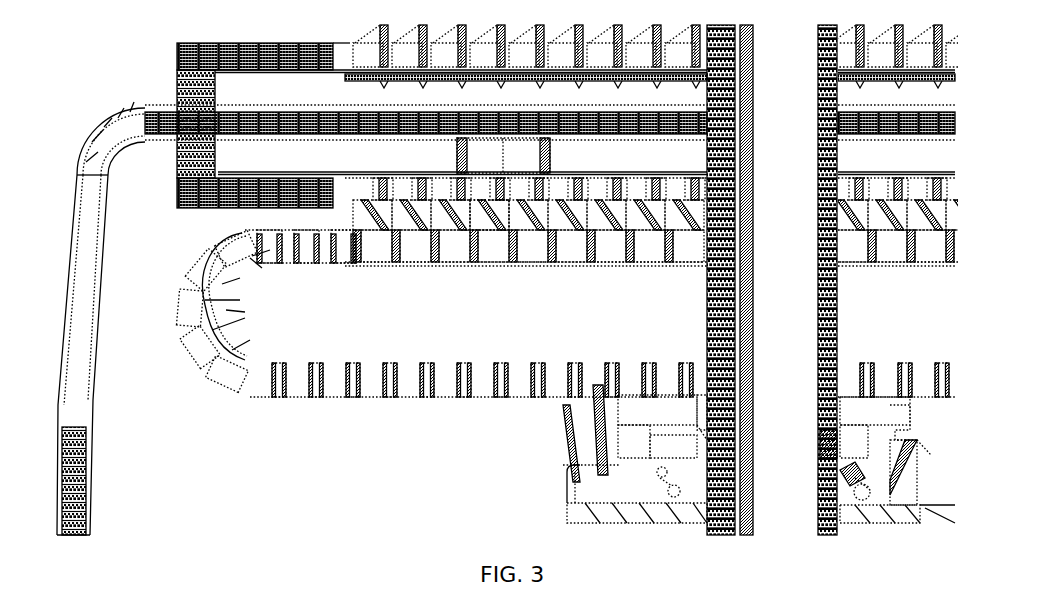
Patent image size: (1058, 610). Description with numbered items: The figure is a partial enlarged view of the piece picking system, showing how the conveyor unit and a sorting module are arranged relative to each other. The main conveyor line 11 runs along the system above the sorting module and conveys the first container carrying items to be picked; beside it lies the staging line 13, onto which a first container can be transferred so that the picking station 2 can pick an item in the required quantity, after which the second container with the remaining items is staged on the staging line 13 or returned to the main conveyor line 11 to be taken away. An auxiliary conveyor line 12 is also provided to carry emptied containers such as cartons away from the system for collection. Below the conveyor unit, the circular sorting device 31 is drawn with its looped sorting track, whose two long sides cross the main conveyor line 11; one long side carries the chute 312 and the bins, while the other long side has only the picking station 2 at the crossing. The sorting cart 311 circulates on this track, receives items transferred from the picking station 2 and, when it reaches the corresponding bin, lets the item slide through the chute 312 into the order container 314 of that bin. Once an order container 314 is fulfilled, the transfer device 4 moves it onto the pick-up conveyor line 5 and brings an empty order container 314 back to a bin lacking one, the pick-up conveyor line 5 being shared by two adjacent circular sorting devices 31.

The picking station 2 is at (618, 480).
The transfer device 4 is at (487, 157).
The pick-up conveyor line 5 is at (257, 118).
The main conveyor line 11 is at (743, 297).
The auxiliary conveyor line 12 is at (805, 348).
The staging line 13 is at (720, 330).
The circular sorting device 31 is at (280, 302).
The sorting cart 311 is at (370, 382).
The chute 312 is at (455, 215).
The order container 314 is at (488, 193).